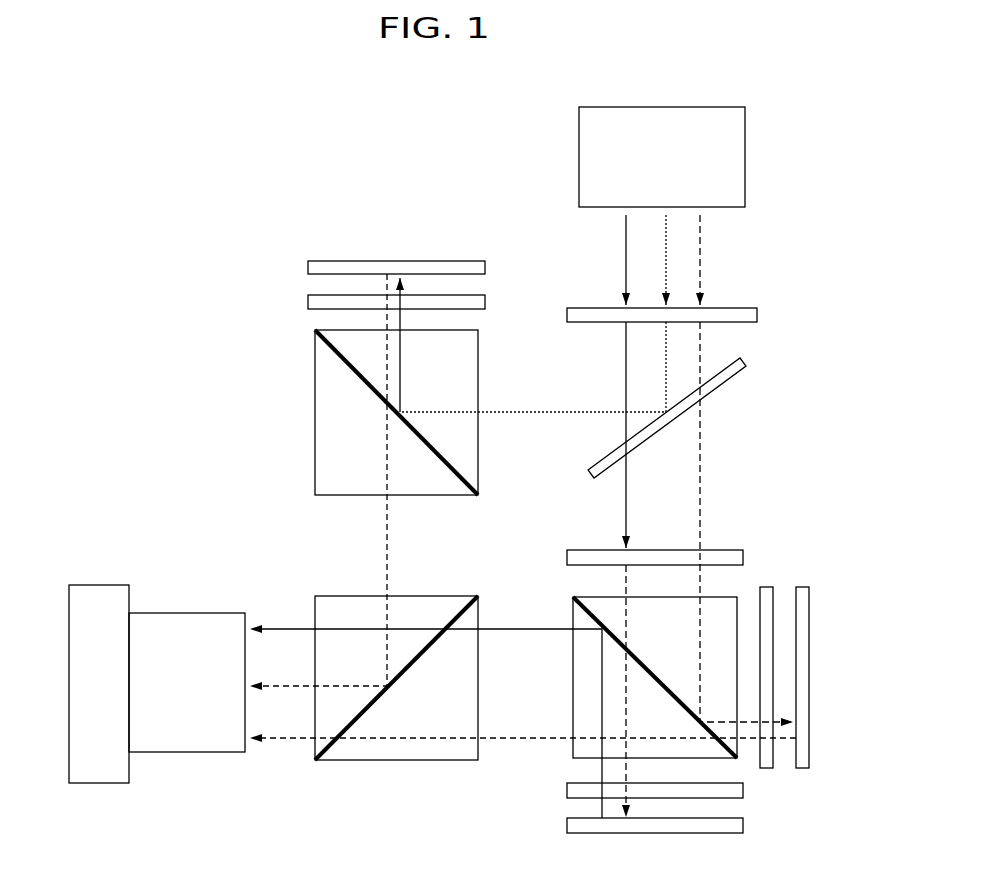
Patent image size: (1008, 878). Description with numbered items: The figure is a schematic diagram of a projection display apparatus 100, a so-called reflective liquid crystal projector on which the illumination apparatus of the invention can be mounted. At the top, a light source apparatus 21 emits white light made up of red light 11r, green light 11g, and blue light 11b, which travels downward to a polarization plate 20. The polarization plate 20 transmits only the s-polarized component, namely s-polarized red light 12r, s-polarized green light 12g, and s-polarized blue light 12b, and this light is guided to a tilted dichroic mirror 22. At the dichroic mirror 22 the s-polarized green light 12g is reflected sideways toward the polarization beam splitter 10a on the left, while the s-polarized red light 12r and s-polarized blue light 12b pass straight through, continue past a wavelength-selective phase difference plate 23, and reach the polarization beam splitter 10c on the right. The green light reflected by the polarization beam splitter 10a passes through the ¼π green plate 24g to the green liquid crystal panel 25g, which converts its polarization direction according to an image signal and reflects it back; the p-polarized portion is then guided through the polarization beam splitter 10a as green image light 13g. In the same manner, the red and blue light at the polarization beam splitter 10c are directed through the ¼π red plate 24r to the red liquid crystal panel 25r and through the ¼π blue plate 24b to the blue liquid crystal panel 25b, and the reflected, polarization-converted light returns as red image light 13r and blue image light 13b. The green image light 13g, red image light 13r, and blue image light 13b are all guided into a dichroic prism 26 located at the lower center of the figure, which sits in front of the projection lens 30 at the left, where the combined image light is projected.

The projection display apparatus 100 is at (414, 186).
The light source apparatus 21 is at (745, 155).
The red light 11r is at (626, 278).
The green light 11g is at (666, 242).
The blue light 11b is at (700, 248).
The polarization plate 20 is at (757, 314).
The s-polarized red light 12r is at (626, 435).
The s-polarized green light 12g is at (667, 355).
The s-polarized blue light 12b is at (700, 475).
The dichroic mirror 22 is at (723, 390).
The phase difference plate 23 is at (743, 557).
The polarization beam splitter 10a is at (315, 385).
The polarization beam splitter 10c is at (573, 685).
The green liquid crystal panel 25g is at (308, 268).
The ¼π green plate 24g is at (308, 303).
The ¼π red plate 24r is at (567, 793).
The red liquid crystal panel 25r is at (567, 827).
The ¼π blue plate 24b is at (765, 770).
The blue liquid crystal panel 25b is at (805, 770).
The red image light 13r is at (278, 628).
The green image light 13g is at (387, 442).
The blue image light 13b is at (408, 740).
The dichroic prism 26 is at (447, 597).
The projection lens 30 is at (185, 612).